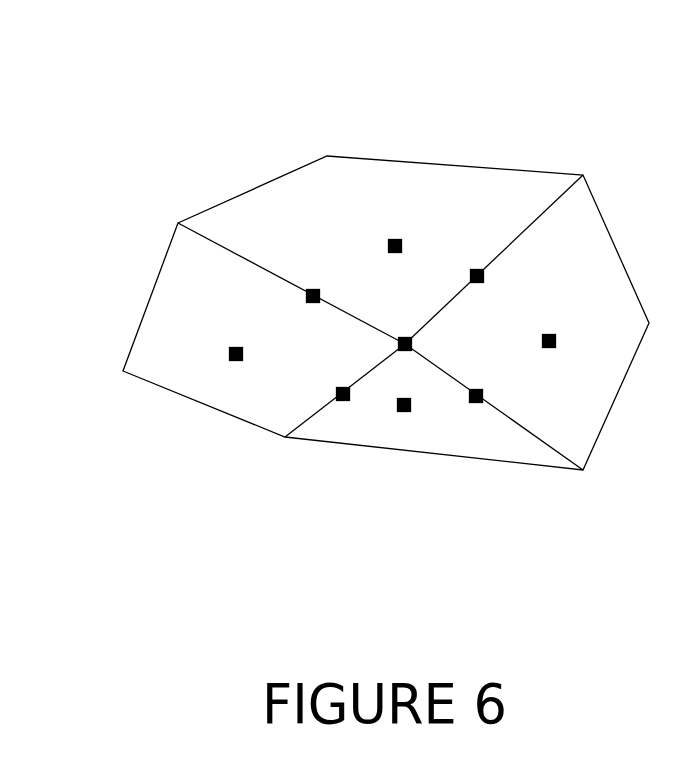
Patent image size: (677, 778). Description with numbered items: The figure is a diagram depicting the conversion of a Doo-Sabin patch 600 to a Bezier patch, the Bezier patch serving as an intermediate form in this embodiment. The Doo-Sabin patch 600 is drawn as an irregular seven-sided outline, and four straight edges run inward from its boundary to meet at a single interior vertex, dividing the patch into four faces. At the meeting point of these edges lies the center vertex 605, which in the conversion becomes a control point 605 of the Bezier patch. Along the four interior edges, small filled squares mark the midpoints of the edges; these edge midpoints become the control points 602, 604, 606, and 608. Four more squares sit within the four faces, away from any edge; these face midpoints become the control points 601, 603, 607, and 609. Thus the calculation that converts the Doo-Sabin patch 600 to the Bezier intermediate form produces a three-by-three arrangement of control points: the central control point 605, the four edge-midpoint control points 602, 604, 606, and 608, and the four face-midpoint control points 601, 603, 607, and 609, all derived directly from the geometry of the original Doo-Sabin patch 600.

The Doo-Sabin patch 600 is at (54, 50).
The control point 601 is at (395, 231).
The control point 602 is at (469, 263).
The control point 603 is at (550, 328).
The control point 604 is at (320, 283).
The center vertex 605 is at (403, 330).
The control point 606 is at (492, 388).
The control point 607 is at (229, 342).
The control point 608 is at (332, 381).
The control point 609 is at (402, 421).